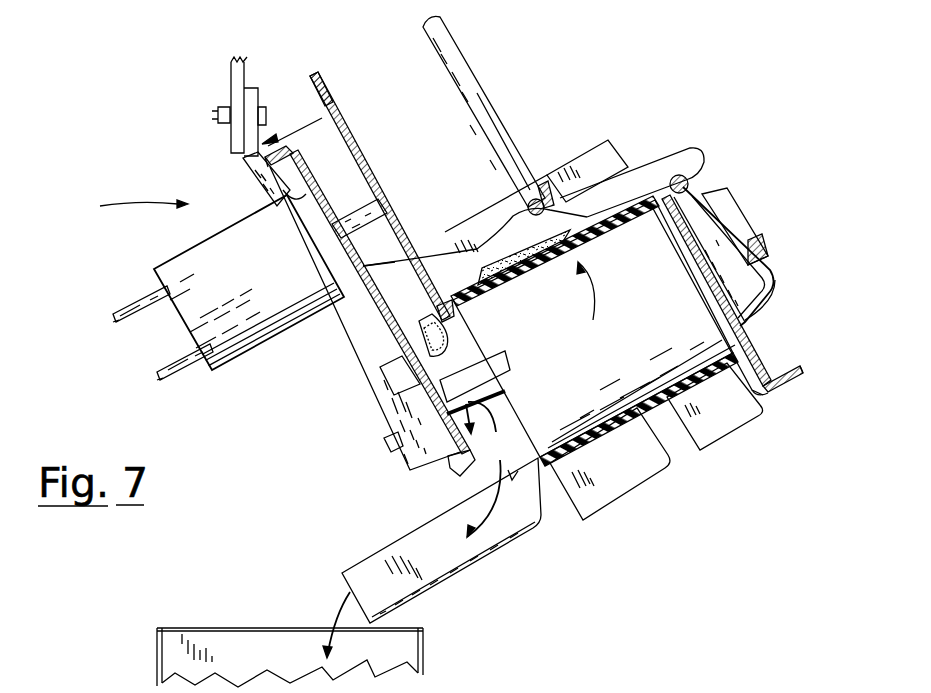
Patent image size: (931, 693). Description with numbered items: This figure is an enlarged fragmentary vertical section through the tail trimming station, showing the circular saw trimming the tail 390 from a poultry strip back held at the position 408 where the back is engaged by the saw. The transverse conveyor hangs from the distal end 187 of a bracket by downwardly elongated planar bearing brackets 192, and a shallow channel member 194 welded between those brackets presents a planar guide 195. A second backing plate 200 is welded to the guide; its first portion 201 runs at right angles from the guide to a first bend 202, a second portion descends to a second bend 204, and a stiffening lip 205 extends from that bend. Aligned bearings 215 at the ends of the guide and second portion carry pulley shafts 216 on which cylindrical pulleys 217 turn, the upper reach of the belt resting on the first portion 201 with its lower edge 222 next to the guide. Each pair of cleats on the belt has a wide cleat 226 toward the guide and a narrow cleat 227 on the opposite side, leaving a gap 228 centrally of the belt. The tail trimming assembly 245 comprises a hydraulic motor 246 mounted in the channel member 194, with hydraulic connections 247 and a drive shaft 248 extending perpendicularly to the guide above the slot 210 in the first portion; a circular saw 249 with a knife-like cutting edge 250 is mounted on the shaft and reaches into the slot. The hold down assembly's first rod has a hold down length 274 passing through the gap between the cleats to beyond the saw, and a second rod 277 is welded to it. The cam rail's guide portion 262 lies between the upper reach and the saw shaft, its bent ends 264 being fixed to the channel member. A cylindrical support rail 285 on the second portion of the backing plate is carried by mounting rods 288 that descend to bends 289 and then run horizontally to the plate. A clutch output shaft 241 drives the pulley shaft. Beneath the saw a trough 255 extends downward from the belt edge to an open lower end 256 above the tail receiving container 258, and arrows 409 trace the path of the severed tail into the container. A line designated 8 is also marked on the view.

The mounting plate 8 is at (246, 88).
The distal end 187 is at (231, 143).
The tail trimming assembly 245 is at (118, 205).
The hydraulic motor 246 is at (277, 267).
The hydraulic connections 247 is at (157, 373).
The circular saw 249 is at (328, 102).
The cutting edge 250 is at (314, 74).
The planar guide 195 is at (306, 183).
The guide portion 262 is at (376, 302).
The channel member 194 is at (388, 393).
The bearing brackets 192 is at (448, 472).
The output shaft 241 is at (390, 446).
The transversely opposite ends 264 is at (397, 357).
The slot 210 is at (453, 324).
The drive shaft 248 is at (386, 204).
The tail 390 is at (381, 269).
The second rod 277 is at (458, 62).
The hold down length 274 is at (542, 210).
The gap 228 is at (543, 183).
The narrow cleat 227 is at (597, 140).
The position 408 is at (641, 175).
The wide cleat 226 is at (486, 206).
The lower lateral edge 222 is at (467, 302).
The first portion 201 is at (540, 276).
The second backing plate 200 is at (595, 298).
The pulleys 217 is at (622, 387).
The pulley shaft 216 is at (474, 368).
The first bend 202 is at (660, 206).
The support rail 285 is at (688, 180).
The bearings 215 is at (718, 200).
The mounting rods 288 is at (748, 245).
The bends 289 is at (774, 286).
The second bend 204 is at (770, 374).
The stiffening lip 205 is at (804, 372).
The arrows 409 is at (408, 530).
The trough 255 is at (480, 555).
The open lower end 256 is at (383, 624).
The tail receiving container 258 is at (283, 661).